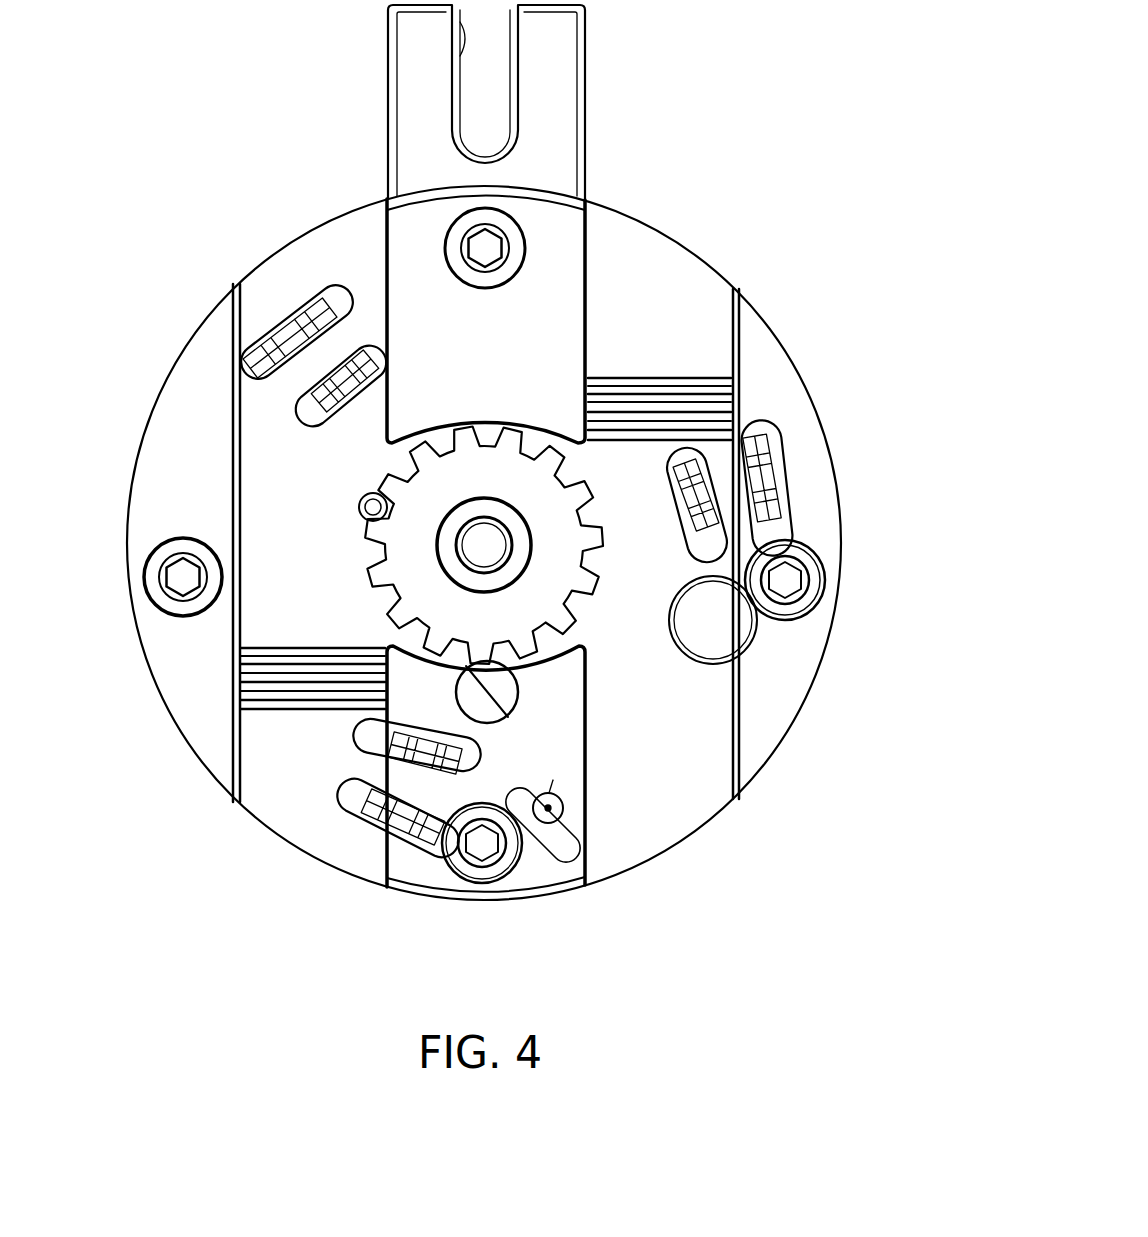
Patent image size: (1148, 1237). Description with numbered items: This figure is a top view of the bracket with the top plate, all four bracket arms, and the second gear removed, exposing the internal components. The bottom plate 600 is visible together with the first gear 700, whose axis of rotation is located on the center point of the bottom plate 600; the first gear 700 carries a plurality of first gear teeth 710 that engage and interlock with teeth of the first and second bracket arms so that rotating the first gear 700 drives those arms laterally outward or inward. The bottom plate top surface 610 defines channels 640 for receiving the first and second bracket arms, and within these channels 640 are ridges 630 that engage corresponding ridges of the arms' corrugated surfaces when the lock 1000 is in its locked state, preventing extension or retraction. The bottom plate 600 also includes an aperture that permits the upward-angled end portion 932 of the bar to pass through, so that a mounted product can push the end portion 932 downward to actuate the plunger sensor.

The bottom plate 600 is at (800, 761).
The bottom plate top surface 610 is at (616, 740).
The ridges 630 is at (771, 330).
The channels 640 is at (343, 272).
The first gear 700 is at (510, 474).
The first gear teeth 710 is at (608, 530).
The end portion 932 is at (553, 852).
The lock 1000 is at (472, 541).